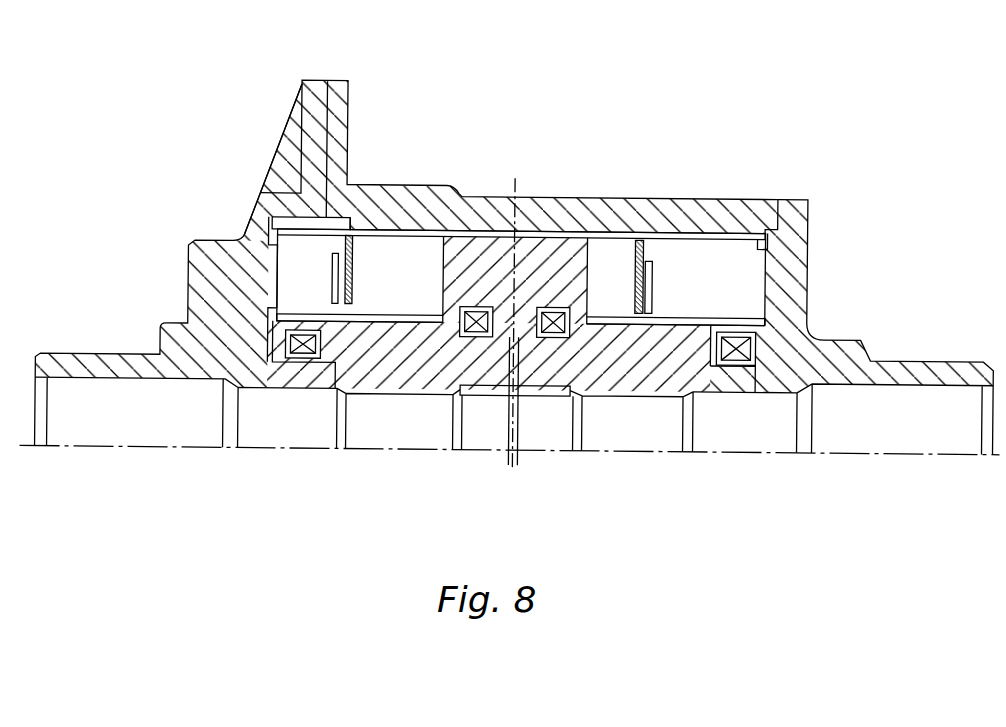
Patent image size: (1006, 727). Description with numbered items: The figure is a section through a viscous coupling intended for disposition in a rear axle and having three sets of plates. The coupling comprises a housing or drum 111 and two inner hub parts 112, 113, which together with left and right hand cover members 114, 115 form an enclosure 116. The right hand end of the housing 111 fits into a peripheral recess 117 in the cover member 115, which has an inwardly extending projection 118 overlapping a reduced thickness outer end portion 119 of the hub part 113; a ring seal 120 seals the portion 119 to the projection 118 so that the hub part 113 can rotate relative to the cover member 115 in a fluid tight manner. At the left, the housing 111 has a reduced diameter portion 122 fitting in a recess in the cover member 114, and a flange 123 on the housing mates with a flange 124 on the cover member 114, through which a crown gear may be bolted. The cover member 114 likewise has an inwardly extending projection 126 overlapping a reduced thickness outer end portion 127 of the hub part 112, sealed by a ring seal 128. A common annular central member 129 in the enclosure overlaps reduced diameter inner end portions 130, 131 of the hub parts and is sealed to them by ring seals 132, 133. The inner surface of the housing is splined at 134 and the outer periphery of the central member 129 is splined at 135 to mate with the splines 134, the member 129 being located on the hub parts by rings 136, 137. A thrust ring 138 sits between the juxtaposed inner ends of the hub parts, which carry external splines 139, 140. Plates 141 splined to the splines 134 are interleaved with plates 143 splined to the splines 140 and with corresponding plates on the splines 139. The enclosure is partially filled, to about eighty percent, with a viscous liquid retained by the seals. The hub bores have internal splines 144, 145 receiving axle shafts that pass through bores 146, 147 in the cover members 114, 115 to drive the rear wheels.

The housing 111 is at (610, 203).
The hub part 112 is at (367, 380).
The hub part 113 is at (677, 368).
The cover member 114 is at (195, 256).
The cover member 115 is at (795, 282).
The enclosure 116 is at (635, 282).
The peripheral recess 117 is at (773, 212).
The inwardly extending projection 118 is at (730, 383).
The reduced thickness outer end portion 119 is at (707, 335).
The ring seal 120 is at (300, 224).
The reduced diameter portion 122 is at (280, 222).
The flange 123 is at (341, 105).
The flange 124 is at (312, 99).
The inwardly extending projection 126 is at (313, 379).
The reduced thickness outer end portion 127 is at (290, 328).
The ring seal 128 is at (298, 365).
The central member 129 is at (540, 259).
The reduced diameter inner end portion 130 is at (497, 340).
The reduced diameter inner end portion 131 is at (528, 340).
The ring seal 132 is at (473, 338).
The ring seal 133 is at (550, 338).
The splines 134 is at (737, 243).
The splines 135 is at (472, 233).
The ring 136 is at (587, 336).
The ring 137 is at (447, 328).
The thrust ring 138 is at (530, 395).
The external splines 139 is at (397, 308).
The external splines 140 is at (697, 303).
The plates 141 is at (352, 250).
The plates 143 is at (655, 271).
The internal splines 144 is at (368, 372).
The internal splines 145 is at (633, 397).
The bore 146 is at (98, 388).
The bore 147 is at (951, 392).